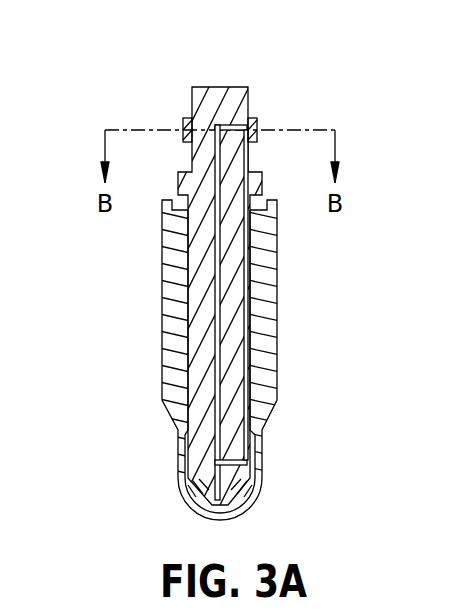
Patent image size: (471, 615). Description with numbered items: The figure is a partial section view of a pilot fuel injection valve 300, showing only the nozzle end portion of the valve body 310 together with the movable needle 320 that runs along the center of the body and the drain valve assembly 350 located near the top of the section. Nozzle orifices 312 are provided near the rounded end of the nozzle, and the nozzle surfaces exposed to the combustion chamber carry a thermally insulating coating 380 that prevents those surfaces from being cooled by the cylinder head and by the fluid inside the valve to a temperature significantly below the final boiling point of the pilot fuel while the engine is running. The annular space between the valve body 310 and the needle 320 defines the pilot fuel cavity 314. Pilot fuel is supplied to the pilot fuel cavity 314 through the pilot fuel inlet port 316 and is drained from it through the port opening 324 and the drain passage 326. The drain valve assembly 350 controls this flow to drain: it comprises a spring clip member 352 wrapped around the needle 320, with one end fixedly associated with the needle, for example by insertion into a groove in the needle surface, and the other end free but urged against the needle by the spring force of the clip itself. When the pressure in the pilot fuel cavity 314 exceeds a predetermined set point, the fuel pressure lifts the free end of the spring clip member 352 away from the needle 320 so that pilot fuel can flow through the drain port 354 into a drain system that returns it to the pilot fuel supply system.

The pilot fuel injection valve 300 is at (143, 78).
The valve body 310 is at (168, 282).
The nozzle orifices 312 is at (185, 490).
The pilot fuel cavity 314 is at (216, 352).
The pilot fuel inlet port 316 is at (267, 270).
The movable needle 320 is at (207, 338).
The port opening 324 is at (260, 440).
The drain passage 326 is at (232, 356).
The drain valve assembly 350 is at (287, 80).
The spring clip member 352 is at (253, 125).
The drain port 354 is at (247, 123).
The coating 380 is at (181, 458).